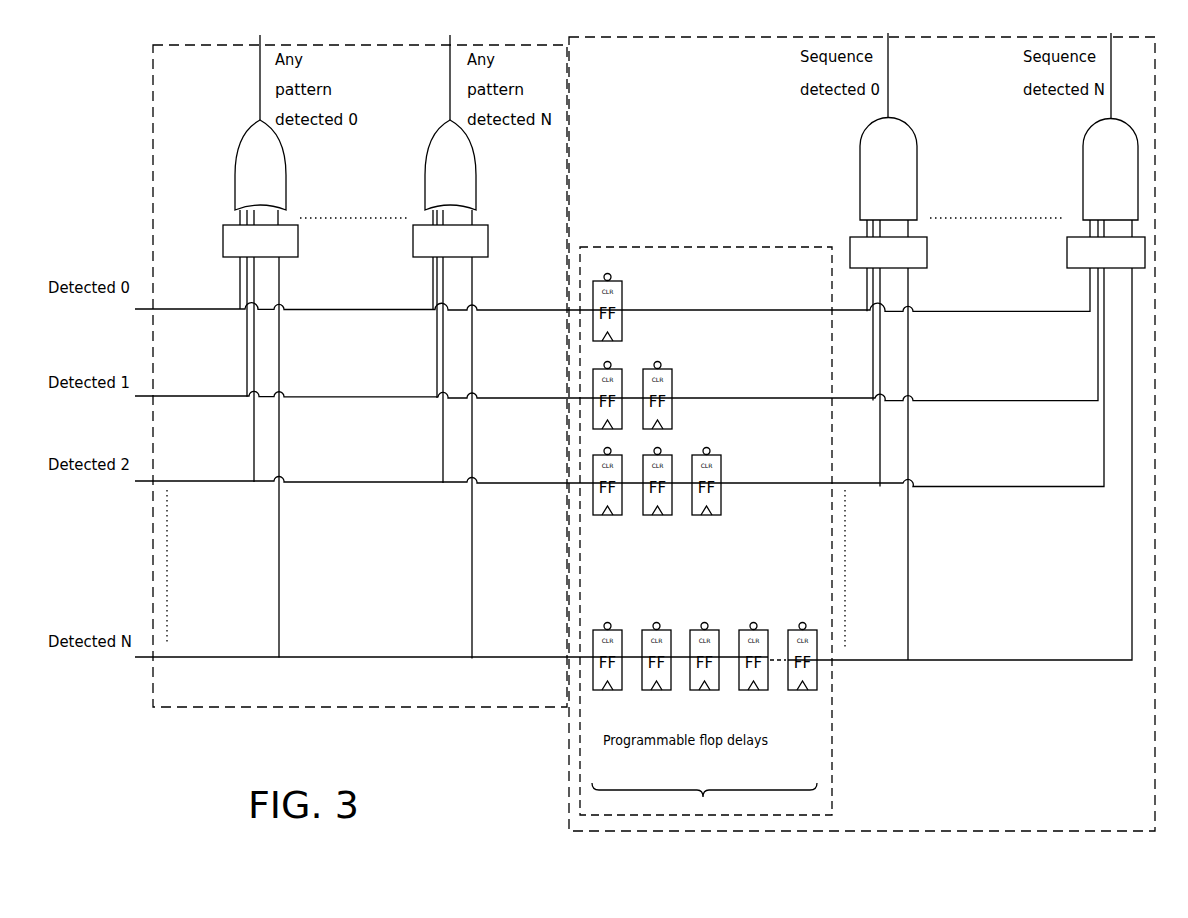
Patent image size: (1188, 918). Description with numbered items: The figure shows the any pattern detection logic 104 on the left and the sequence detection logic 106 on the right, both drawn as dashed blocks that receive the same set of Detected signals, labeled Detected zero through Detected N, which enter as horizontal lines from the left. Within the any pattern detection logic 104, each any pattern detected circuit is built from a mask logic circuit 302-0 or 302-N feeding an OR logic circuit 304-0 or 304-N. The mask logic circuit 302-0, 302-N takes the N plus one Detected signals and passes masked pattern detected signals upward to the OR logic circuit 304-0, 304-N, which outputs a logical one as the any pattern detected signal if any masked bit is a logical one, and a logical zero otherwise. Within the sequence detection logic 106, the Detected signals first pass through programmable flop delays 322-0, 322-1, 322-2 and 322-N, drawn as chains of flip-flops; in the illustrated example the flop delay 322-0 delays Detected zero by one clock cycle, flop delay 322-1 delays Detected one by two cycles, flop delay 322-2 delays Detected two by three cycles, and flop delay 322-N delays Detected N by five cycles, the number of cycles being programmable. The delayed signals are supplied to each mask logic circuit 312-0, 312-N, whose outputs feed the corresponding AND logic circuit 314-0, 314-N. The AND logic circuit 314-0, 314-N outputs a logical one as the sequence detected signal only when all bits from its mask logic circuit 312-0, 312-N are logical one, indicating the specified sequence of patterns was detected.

The any pattern detection logic 104 is at (233, 707).
The sequence detection logic 106 is at (567, 755).
The mask logic circuit 302-0 is at (227, 240).
The mask logic circuit 302-N is at (490, 238).
The OR logic circuit 304-0 is at (260, 122).
The OR logic circuit 304-N is at (450, 122).
The mask logic circuit 312-0 is at (850, 237).
The mask logic circuit 312-N is at (1070, 238).
The AND logic circuit 314-0 is at (888, 126).
The AND logic circuit 314-N is at (1110, 126).
The programmable flop delay 322-0 is at (639, 308).
The programmable flop delay 322-1 is at (662, 396).
The programmable flop delay 322-2 is at (683, 482).
The programmable flop delay 322-N is at (705, 644).